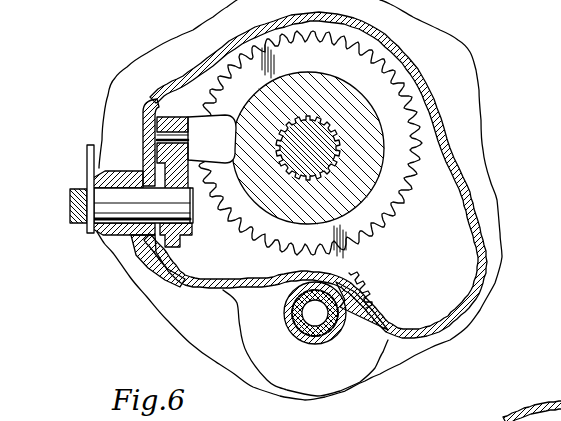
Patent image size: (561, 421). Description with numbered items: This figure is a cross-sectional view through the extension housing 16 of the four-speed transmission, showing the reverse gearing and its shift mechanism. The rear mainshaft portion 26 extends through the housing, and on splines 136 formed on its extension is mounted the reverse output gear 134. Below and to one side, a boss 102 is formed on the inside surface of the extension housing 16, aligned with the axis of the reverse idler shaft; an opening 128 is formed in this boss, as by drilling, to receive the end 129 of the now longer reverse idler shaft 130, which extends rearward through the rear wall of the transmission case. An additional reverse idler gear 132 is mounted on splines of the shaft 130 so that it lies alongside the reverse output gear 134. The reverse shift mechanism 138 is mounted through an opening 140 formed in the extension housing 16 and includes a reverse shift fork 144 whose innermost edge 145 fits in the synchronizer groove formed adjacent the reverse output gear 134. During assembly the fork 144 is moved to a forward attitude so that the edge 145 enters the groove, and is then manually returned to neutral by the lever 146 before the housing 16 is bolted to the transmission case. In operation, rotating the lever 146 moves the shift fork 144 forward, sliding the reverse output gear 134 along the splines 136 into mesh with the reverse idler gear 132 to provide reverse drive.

The extension housing 16 is at (216, 54).
The mainshaft portion 26 is at (320, 138).
The boss 102 is at (343, 282).
The opening 128 is at (334, 305).
The end 129 is at (312, 313).
The reverse idler shaft 130 is at (296, 330).
The reverse idler gear 132 is at (357, 291).
The reverse output gear 134 is at (378, 70).
The splines 136 is at (330, 157).
The reverse shift mechanism 138 is at (163, 104).
The opening 140 is at (133, 240).
The reverse shift fork 144 is at (197, 118).
The innermost edge 145 is at (223, 118).
The lever 146 is at (88, 158).